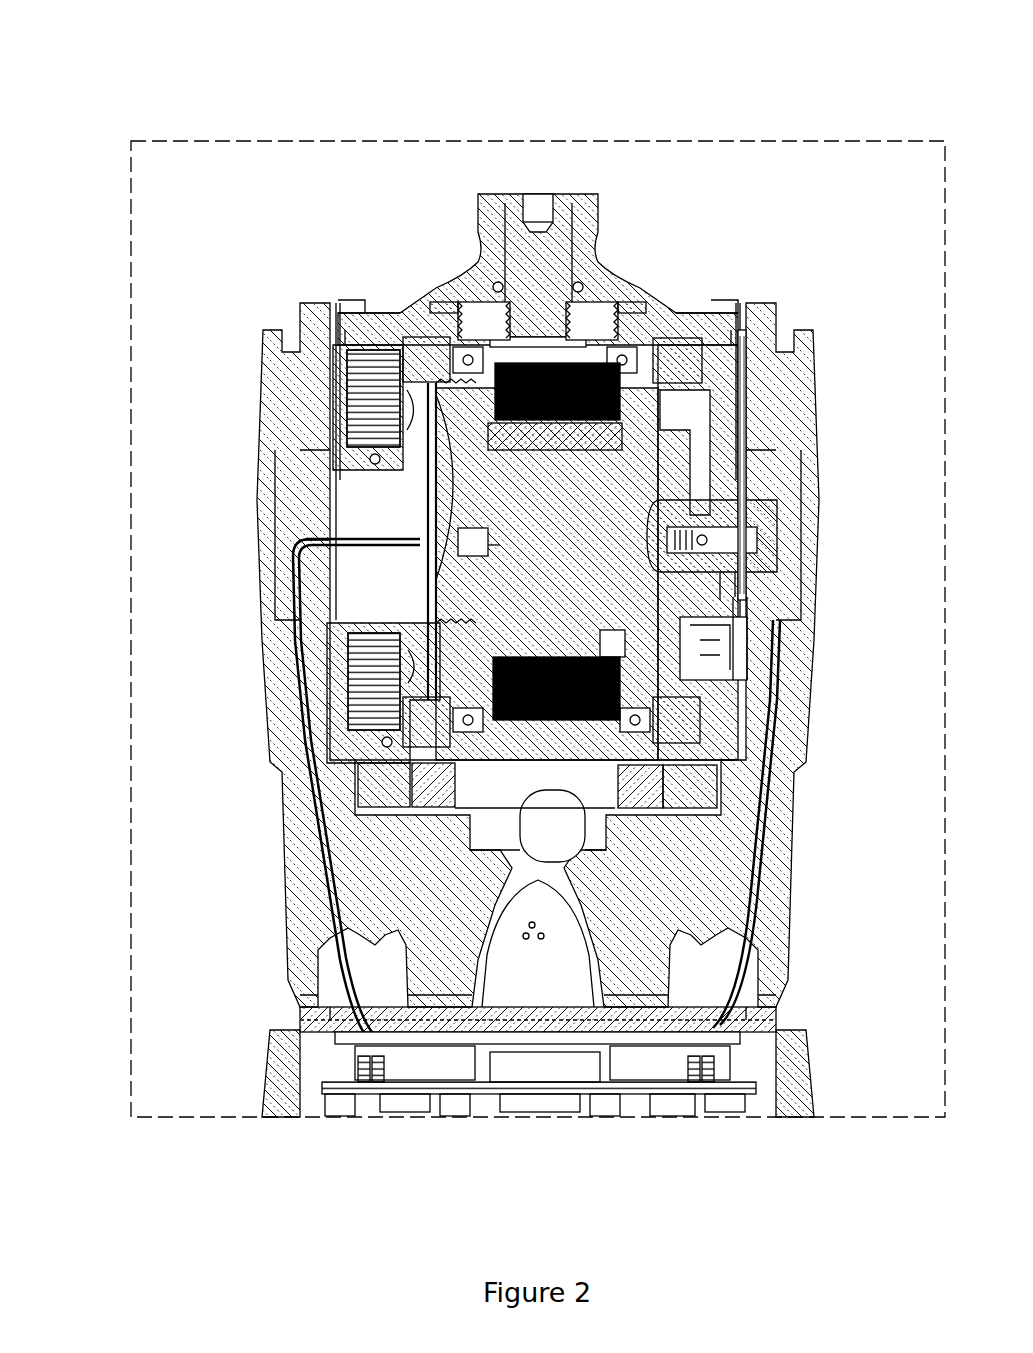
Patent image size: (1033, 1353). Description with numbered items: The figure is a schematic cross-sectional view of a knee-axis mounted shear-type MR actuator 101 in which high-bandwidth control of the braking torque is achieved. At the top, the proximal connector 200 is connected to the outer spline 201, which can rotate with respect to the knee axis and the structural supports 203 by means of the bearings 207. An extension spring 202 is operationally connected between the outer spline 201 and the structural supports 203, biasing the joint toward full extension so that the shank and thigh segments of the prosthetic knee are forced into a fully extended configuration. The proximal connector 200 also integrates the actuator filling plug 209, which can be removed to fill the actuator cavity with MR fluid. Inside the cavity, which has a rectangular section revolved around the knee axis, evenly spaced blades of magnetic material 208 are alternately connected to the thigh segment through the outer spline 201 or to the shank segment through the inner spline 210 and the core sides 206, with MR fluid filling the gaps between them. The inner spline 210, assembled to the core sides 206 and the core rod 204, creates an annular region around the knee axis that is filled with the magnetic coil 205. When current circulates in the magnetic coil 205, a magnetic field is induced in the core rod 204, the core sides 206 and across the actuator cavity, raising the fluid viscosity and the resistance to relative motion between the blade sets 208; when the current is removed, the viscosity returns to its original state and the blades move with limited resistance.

The shear-type MR actuator 101 is at (116, 43).
The proximal connector 200 is at (593, 237).
The outer spline 201 is at (668, 312).
The extension spring 202 is at (385, 678).
The structural supports 203 is at (730, 1118).
The core rod 204 is at (545, 562).
The magnetic coil 205 is at (395, 408).
The core sides 206 is at (355, 335).
The bearings 207 is at (430, 340).
The blades of magnetic material 208 is at (507, 360).
The actuator filling plug 209 is at (522, 245).
The inner spline 210 is at (618, 425).